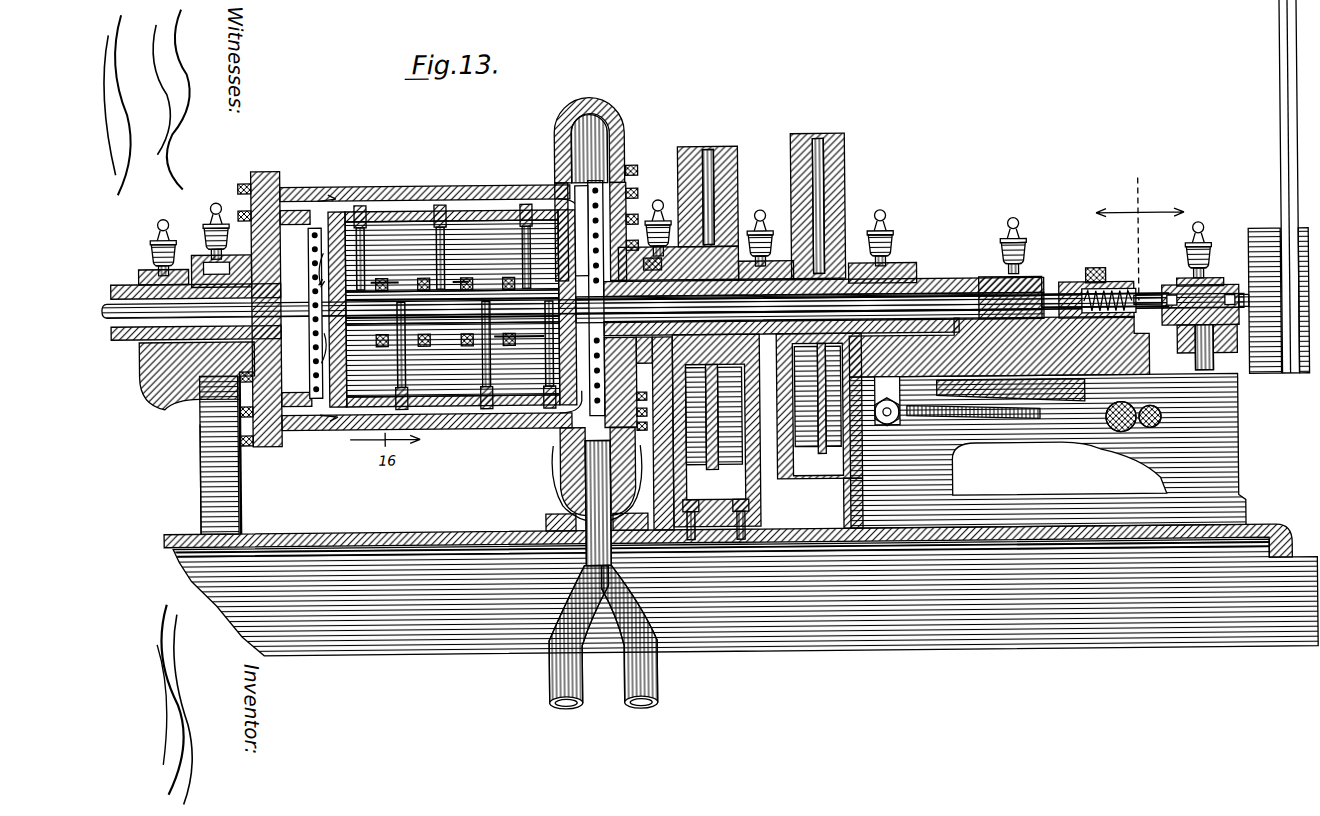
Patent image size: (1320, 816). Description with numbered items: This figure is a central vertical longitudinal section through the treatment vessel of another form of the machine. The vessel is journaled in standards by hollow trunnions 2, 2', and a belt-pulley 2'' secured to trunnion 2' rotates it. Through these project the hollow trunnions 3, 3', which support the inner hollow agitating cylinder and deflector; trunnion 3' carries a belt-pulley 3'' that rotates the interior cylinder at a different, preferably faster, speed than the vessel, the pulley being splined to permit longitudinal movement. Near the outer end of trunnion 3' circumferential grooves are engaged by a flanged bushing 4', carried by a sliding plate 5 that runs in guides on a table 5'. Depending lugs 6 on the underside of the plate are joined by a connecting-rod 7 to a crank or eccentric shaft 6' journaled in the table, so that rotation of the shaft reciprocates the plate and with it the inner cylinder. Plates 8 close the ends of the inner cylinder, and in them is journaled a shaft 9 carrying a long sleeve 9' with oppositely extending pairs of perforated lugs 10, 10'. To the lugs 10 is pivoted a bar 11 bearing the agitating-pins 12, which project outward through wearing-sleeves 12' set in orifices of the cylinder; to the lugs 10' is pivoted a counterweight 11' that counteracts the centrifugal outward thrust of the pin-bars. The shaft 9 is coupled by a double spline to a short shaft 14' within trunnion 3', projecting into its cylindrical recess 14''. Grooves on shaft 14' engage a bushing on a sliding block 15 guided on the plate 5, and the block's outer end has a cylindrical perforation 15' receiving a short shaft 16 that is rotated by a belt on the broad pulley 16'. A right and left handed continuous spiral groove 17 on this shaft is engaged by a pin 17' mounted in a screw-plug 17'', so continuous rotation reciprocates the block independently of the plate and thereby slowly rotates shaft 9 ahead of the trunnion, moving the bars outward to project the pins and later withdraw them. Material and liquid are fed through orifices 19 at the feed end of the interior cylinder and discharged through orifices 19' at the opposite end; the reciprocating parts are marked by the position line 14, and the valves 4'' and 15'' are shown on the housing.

The hollow trunnion 2 is at (195, 245).
The hollow trunnion 2' is at (766, 235).
The belt-pulley 2'' is at (689, 331).
The hollow trunnion 3 is at (672, 297).
The hollow trunnion 3' is at (823, 259).
The belt-pulley 3'' is at (818, 316).
The flanged bushing 4' is at (891, 267).
The valve 4'' is at (893, 238).
The sliding plate 5 is at (871, 353).
The table 5' is at (1058, 450).
The depending lugs 6 is at (877, 411).
The crank or eccentric shaft 6' is at (1119, 433).
The connecting-rod 7 is at (1025, 416).
The plate 8 is at (318, 265).
The shaft 9 is at (810, 343).
The long sleeve 9' is at (452, 308).
The perforated lugs 10 is at (444, 272).
The perforated lugs 10' is at (445, 342).
The bar 11 is at (422, 272).
The counterweight 11' is at (526, 348).
The agitating-pins 12 is at (463, 307).
The wearing-sleeves 12' is at (454, 304).
The centre line 14 is at (1140, 229).
The short shaft 14' is at (1010, 281).
The cylindrical recess 14'' is at (991, 253).
The sliding block 15 is at (999, 346).
The cylindrical perforation 15' is at (1097, 288).
The valve 15'' is at (1030, 247).
The short shaft 16 is at (1203, 295).
The broad pulley 16' is at (1269, 187).
The spiral groove 17 is at (1105, 313).
The pin 17' is at (1145, 279).
The screw-plug 17'' is at (1107, 269).
The orifices 19 is at (306, 354).
The orifices 19' is at (621, 227).